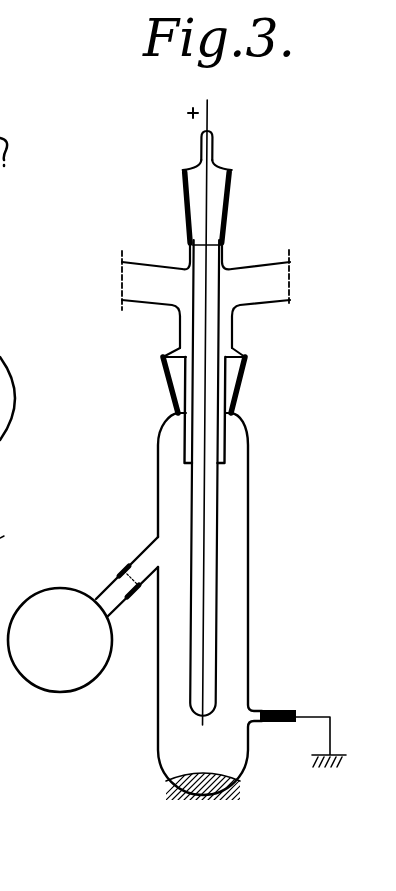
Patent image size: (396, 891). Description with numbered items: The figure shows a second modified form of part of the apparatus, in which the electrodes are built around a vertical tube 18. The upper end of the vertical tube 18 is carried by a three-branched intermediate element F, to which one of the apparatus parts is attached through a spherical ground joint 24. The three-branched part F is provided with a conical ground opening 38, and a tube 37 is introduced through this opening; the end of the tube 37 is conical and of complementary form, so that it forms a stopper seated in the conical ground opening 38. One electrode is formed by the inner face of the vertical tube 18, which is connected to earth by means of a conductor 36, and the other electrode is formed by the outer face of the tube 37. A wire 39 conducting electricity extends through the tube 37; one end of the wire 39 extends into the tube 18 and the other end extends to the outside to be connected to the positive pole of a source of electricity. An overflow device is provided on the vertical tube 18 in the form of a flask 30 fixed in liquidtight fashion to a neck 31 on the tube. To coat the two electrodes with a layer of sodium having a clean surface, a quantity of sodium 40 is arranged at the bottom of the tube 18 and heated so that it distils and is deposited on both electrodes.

The vertical tube 18 is at (251, 545).
The spherical ground joint 24 is at (250, 378).
The flask 30 is at (86, 679).
The neck 31 is at (147, 553).
The conductor 36 is at (330, 717).
The tube 37 is at (216, 608).
The conical ground opening 38 is at (229, 195).
The wire 39 is at (205, 472).
The sodium 40 is at (216, 790).
The intermediate element F is at (232, 268).